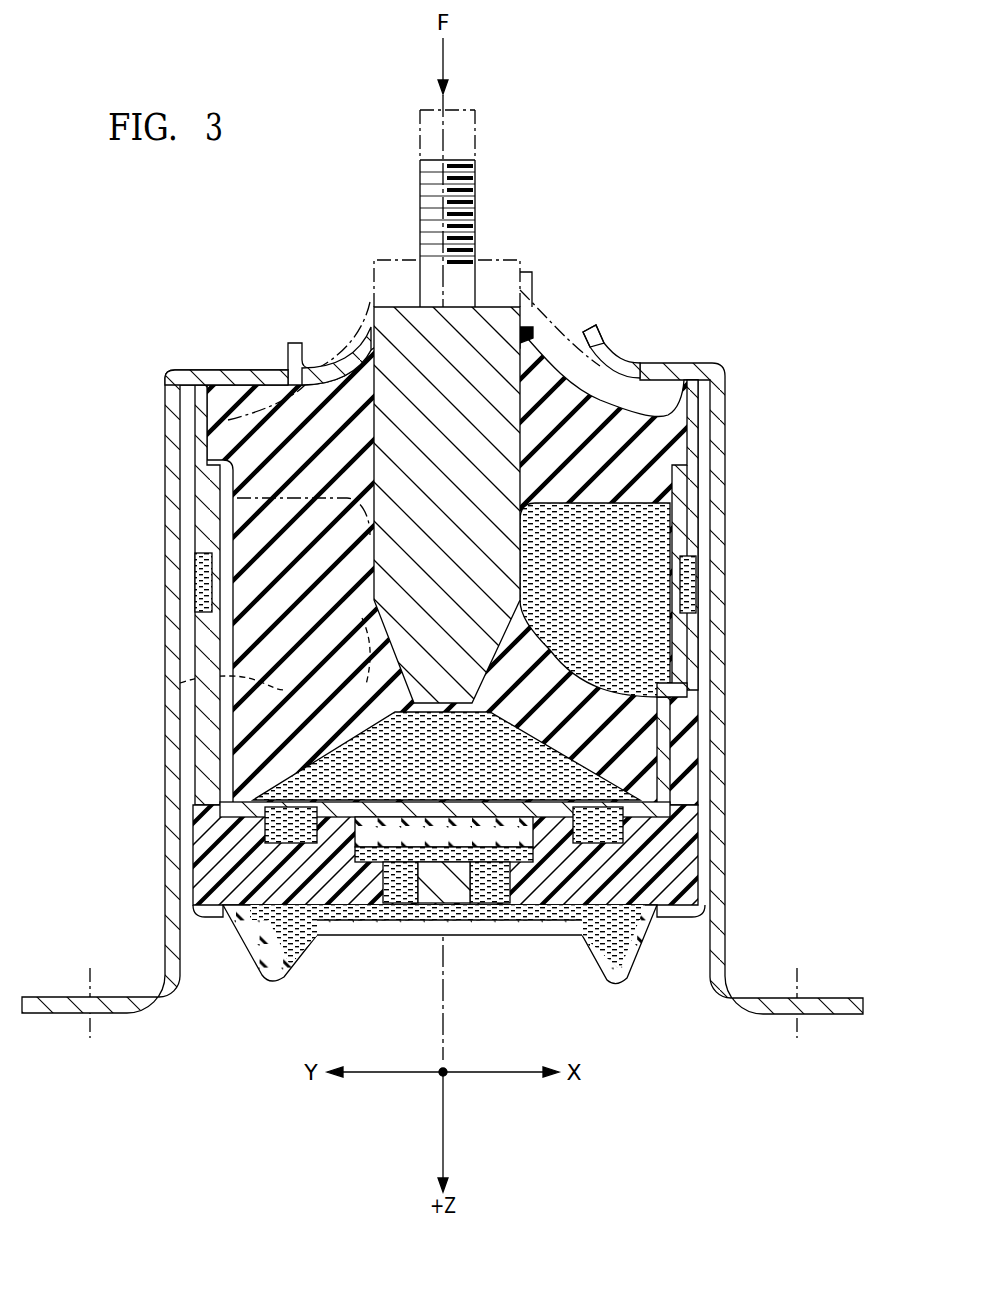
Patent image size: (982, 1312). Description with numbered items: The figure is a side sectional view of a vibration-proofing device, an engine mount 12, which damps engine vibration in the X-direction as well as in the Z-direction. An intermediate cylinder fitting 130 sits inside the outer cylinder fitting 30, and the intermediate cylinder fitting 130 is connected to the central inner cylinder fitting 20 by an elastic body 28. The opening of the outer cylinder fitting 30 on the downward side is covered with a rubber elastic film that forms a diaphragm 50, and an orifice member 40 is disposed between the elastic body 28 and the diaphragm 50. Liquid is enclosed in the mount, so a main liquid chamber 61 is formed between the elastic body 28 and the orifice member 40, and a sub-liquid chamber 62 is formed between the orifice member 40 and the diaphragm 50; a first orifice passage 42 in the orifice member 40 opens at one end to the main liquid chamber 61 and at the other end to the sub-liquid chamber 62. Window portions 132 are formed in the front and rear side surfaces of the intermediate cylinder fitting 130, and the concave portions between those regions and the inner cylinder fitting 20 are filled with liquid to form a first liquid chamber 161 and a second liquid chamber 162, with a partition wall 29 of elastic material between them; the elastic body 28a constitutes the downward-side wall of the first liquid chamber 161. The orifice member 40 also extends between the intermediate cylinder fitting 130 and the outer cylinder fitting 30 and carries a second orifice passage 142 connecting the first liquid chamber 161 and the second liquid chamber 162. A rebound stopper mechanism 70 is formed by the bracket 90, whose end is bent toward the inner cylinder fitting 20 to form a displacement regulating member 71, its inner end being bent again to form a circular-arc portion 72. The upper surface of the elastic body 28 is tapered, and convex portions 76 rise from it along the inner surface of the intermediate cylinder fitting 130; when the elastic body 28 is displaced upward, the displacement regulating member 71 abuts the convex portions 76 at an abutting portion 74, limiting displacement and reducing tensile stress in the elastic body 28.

The engine mount 12 is at (618, 172).
The inner cylinder fitting 20 is at (490, 318).
The elastic body 28 is at (624, 350).
The elastic body 28a is at (593, 336).
The partition wall 29 is at (243, 633).
The outer cylinder fitting 30 is at (702, 507).
The orifice member 40 is at (683, 870).
The first orifice passage 42 is at (663, 825).
The diaphragm 50 is at (533, 927).
The main liquid chamber 61 is at (290, 770).
The sub-liquid chamber 62 is at (283, 927).
The rebound stopper mechanism 70 is at (268, 326).
The displacement regulating member 71 is at (235, 373).
The circular-arc portion 72 is at (303, 343).
The abutting portion 74 is at (260, 378).
The convex portions 76 is at (243, 410).
The bracket 90 is at (172, 522).
The intermediate cylinder fitting 130 is at (690, 417).
The window portions 132 is at (663, 683).
The second orifice passage 142 is at (200, 585).
The first liquid chamber 161 is at (650, 650).
The second liquid chamber 162 is at (180, 683).